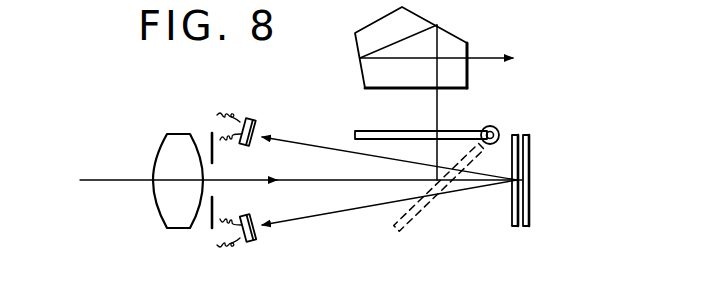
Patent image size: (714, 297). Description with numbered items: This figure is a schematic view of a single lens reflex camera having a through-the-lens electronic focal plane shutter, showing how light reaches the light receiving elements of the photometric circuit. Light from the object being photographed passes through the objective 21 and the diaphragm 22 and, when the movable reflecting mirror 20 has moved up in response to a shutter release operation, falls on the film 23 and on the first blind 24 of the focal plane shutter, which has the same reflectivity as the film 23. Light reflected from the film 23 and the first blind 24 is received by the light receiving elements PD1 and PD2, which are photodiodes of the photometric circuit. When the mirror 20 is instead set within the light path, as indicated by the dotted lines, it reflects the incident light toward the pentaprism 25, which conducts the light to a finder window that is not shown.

The movable reflecting mirror 20 is at (355, 135).
The objective 21 is at (167, 134).
The diaphragm 22 is at (208, 228).
The film 23 is at (530, 133).
The first blind 24 is at (513, 218).
The pentaprism 25 is at (469, 42).
The light receiving element PD1 is at (254, 120).
The light receiving element PD2 is at (254, 240).